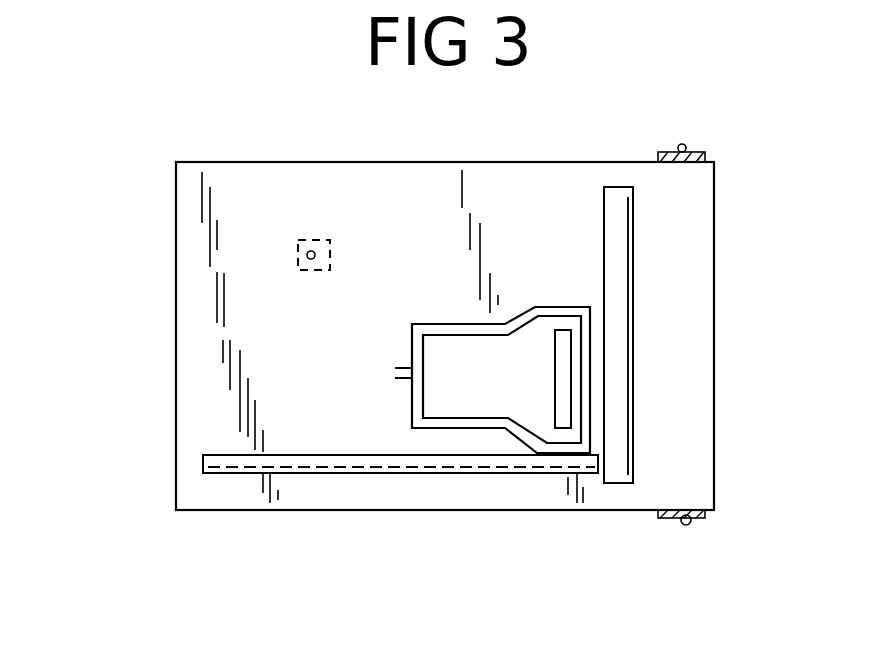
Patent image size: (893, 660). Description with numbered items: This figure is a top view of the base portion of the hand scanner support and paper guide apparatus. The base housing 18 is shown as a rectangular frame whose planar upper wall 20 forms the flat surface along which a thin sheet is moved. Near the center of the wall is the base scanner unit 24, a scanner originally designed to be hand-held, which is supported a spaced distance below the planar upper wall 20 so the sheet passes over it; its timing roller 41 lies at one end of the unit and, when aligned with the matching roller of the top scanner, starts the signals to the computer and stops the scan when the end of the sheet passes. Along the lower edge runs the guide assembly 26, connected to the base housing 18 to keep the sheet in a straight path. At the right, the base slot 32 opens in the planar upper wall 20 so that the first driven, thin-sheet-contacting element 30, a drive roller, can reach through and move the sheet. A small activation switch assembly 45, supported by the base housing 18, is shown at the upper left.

The base housing 18 is at (176, 468).
The planar upper wall 20 is at (282, 363).
The base scanner unit 24 is at (493, 418).
The guide assembly 26 is at (382, 473).
The first driven, thin-sheet-contacting element 30 is at (622, 283).
The base slot 32 is at (633, 220).
The timing roller 41 is at (560, 340).
The activation switch assembly 45 is at (307, 255).